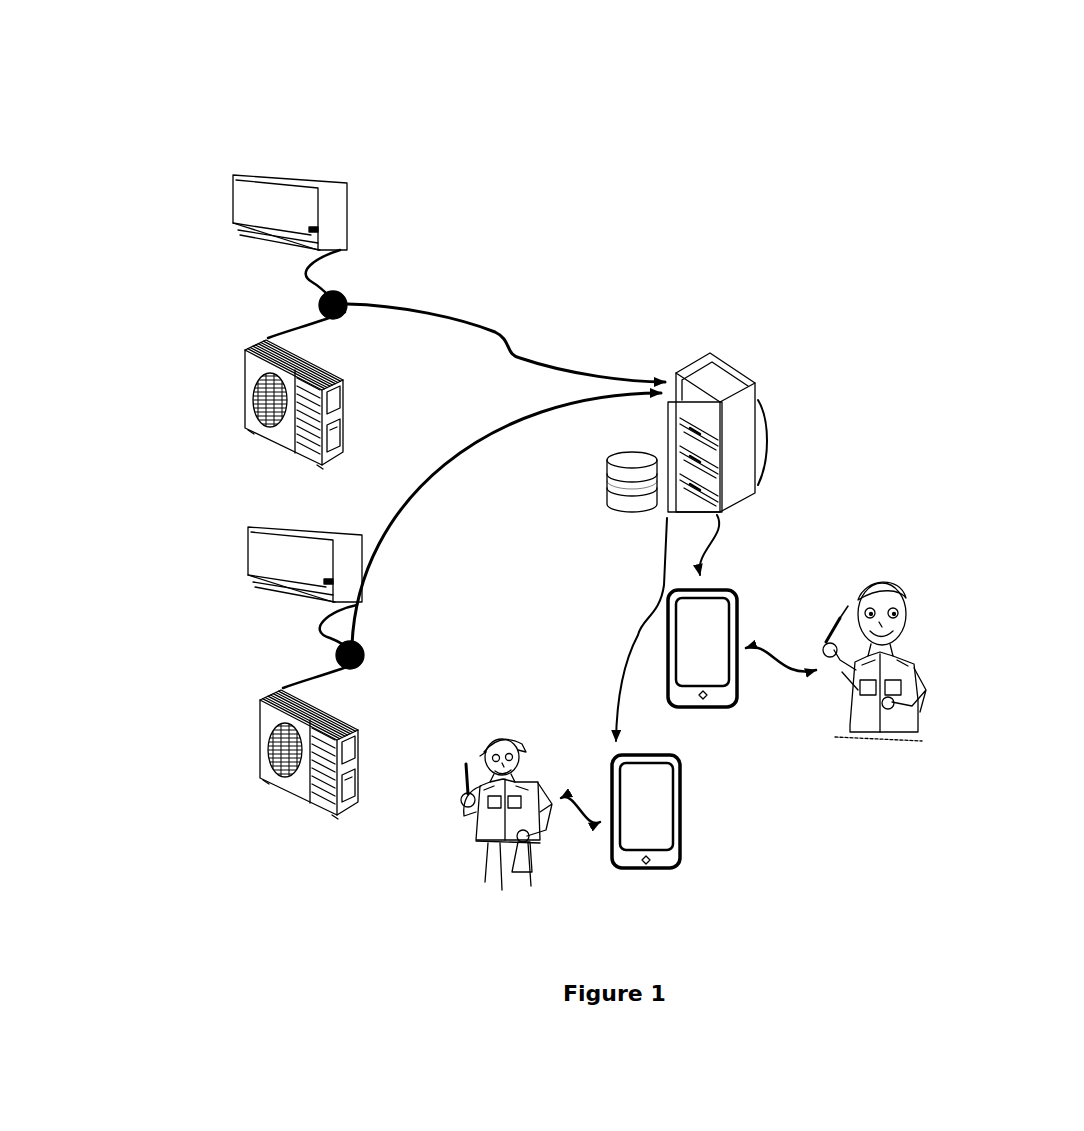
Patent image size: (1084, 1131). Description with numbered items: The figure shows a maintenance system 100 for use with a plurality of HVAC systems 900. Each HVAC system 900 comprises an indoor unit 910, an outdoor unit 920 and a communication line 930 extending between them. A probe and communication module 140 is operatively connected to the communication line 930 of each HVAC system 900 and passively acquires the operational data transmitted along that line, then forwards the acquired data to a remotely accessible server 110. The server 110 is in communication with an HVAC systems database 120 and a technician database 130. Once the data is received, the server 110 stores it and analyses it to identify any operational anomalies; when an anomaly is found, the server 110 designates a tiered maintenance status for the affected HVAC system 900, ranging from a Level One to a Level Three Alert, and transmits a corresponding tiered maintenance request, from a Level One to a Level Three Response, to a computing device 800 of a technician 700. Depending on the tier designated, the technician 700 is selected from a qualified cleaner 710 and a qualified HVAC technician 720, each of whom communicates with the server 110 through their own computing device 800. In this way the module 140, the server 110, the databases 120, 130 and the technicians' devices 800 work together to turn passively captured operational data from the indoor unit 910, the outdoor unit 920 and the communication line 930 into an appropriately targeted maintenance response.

The maintenance system 100 is at (825, 124).
The remotely accessible server 110 is at (757, 383).
The HVAC systems database 120 is at (607, 483).
The technician database 130 is at (608, 486).
The probe and communication module 140 is at (353, 296).
The technician 700 is at (558, 877).
The qualified cleaner 710 is at (453, 828).
The qualified HVAC technician 720 is at (890, 573).
The computing device 800 is at (682, 785).
The HVAC system 900 is at (170, 222).
The indoor unit 910 is at (307, 177).
The outdoor unit 920 is at (245, 398).
The communication line 930 is at (303, 323).